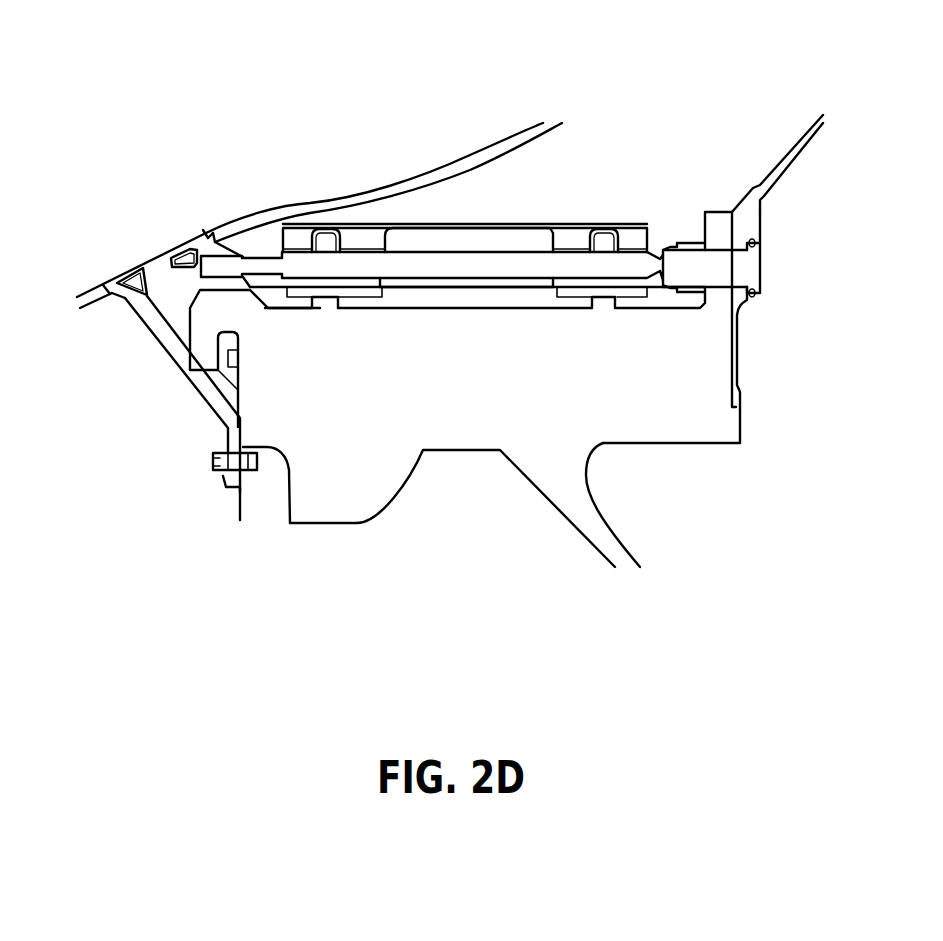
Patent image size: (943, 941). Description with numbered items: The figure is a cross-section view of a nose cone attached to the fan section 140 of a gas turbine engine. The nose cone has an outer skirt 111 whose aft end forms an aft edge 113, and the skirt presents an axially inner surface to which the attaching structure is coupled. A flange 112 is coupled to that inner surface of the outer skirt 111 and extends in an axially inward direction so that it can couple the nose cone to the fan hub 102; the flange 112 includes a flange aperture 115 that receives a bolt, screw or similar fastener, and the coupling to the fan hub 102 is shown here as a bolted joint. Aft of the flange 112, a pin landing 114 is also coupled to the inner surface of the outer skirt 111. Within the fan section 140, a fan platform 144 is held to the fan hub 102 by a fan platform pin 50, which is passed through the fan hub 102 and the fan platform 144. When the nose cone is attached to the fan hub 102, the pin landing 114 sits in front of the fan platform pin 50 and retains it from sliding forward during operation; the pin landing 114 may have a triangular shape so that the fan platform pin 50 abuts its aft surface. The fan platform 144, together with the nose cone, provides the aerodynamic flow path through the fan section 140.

The fan section 140 is at (303, 88).
The outer skirt 111 is at (91, 294).
The aft edge 113 is at (208, 233).
The pin landing 114 is at (181, 256).
The flange 112 is at (177, 357).
The flange aperture 115 is at (234, 466).
The fan platform pin 50 is at (490, 268).
The fan platform 144 is at (633, 243).
The fan hub 102 is at (600, 423).